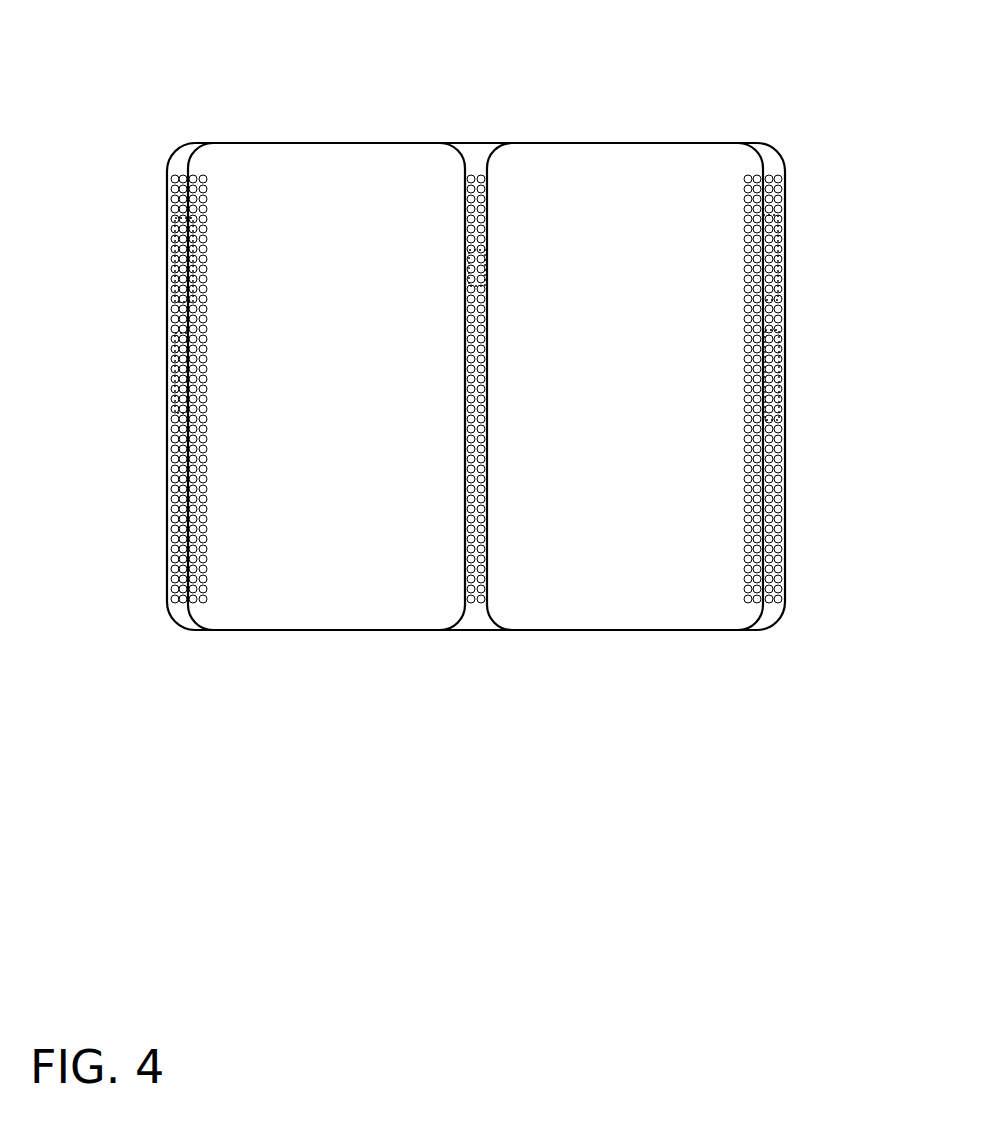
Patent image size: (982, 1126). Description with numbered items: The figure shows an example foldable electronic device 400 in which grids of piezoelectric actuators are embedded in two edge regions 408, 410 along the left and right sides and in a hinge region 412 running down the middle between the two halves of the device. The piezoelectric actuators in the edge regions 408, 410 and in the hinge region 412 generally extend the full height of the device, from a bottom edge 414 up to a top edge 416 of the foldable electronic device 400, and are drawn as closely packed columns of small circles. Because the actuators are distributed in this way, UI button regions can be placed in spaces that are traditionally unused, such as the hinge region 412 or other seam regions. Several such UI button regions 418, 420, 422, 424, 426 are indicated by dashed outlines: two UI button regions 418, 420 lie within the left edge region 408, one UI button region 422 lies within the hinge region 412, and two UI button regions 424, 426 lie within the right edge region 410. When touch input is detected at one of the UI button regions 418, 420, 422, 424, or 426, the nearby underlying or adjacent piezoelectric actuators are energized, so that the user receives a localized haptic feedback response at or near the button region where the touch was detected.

The foldable electronic device 400 is at (146, 76).
The edge region 408 is at (190, 165).
The edge region 410 is at (768, 155).
The hinge region 412 is at (478, 170).
The bottom edge 414 is at (549, 630).
The top edge 416 is at (611, 143).
The UI button region 418 is at (172, 257).
The UI button region 420 is at (172, 383).
The UI button region 422 is at (484, 268).
The UI button region 424 is at (770, 222).
The UI button region 426 is at (778, 357).